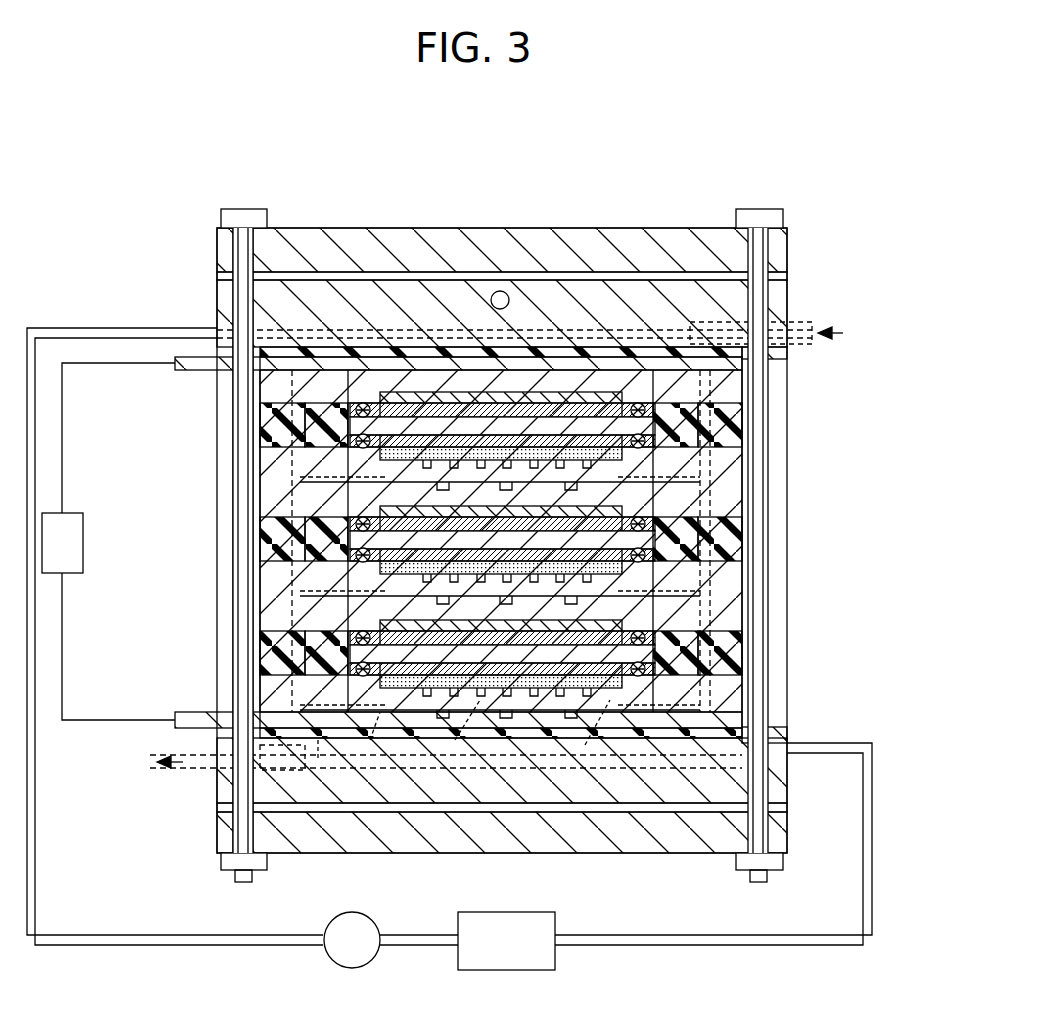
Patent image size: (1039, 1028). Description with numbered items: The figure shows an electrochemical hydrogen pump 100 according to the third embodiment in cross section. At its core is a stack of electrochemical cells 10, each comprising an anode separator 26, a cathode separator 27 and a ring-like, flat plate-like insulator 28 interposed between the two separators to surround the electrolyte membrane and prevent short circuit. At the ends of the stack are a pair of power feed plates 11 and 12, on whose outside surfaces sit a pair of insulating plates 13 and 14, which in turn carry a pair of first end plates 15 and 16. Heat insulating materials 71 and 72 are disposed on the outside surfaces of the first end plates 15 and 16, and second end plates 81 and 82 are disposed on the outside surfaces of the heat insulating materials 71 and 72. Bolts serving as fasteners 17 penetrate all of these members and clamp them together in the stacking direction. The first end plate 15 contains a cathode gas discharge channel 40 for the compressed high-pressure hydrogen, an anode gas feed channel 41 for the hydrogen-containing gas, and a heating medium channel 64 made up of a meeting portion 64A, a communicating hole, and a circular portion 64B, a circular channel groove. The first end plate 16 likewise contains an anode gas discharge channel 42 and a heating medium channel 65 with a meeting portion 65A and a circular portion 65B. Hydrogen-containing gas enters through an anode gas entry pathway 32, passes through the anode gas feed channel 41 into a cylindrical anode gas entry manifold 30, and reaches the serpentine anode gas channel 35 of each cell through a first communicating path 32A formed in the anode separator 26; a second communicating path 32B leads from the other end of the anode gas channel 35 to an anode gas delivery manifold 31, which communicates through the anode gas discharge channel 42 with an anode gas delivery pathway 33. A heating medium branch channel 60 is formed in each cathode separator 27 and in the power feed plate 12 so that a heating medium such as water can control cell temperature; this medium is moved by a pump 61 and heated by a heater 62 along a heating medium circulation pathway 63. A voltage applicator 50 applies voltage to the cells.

The electrochemical hydrogen pump 100 is at (368, 110).
The electrochemical cell 10 is at (410, 555).
The power feed plate 11 is at (207, 371).
The power feed plate 12 is at (207, 711).
The insulating plate 13 is at (787, 353).
The insulating plate 14 is at (790, 735).
The first end plate 15 is at (622, 290).
The first end plate 16 is at (520, 788).
The fastener 17 is at (222, 208).
The anode separator 26 is at (280, 578).
The cathode separator 27 is at (270, 500).
The insulator 28 is at (278, 548).
The anode gas entry manifold 30 is at (745, 856).
The anode gas delivery manifold 31 is at (318, 760).
The anode gas entry pathway 32 is at (810, 330).
The first communicating path 32A is at (585, 745).
The second communicating path 32B is at (373, 742).
The anode gas delivery pathway 33 is at (200, 770).
The anode gas channel 35 is at (455, 742).
The cathode gas discharge channel 40 is at (500, 291).
The anode gas feed channel 41 is at (715, 345).
The anode gas discharge channel 42 is at (283, 740).
The voltage applicator 50 is at (77, 557).
The heating medium branch channel 60 is at (640, 600).
The pump 61 is at (367, 952).
The heater 62 is at (522, 952).
The heating medium circulation pathway 63 is at (58, 327).
The heating medium channel 64 is at (327, 415).
The meeting portion 64A is at (297, 405).
The circular portion 64B is at (340, 405).
The heating medium channel 65 is at (663, 666).
The meeting portion 65A is at (720, 700).
The circular portion 65B is at (675, 700).
The heat insulating material 71 is at (217, 276).
The heat insulating material 72 is at (217, 808).
The second end plate 81 is at (570, 245).
The second end plate 82 is at (480, 830).